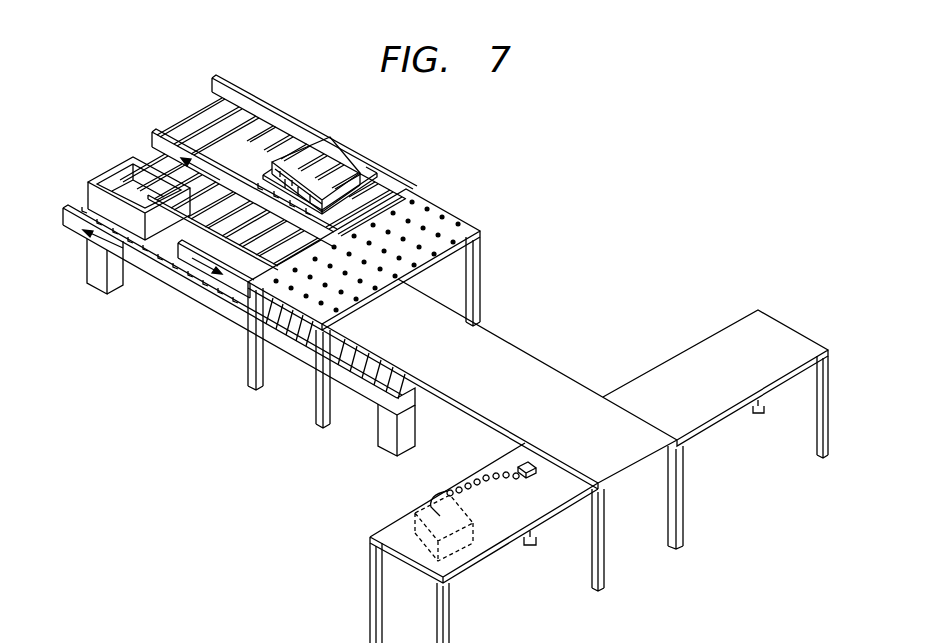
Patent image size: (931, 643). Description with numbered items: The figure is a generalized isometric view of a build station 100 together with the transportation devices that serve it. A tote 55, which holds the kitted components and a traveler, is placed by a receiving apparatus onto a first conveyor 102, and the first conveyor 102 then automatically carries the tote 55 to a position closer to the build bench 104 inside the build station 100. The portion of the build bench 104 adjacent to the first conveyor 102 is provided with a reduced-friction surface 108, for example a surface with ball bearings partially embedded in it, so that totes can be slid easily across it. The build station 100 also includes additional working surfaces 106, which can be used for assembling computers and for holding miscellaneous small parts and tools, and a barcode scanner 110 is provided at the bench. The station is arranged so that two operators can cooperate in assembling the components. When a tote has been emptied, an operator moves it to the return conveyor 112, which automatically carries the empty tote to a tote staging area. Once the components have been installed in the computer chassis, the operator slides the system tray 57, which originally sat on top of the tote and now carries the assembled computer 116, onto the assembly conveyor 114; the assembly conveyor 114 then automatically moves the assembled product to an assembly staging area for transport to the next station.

The build station 100 is at (552, 124).
The assembly conveyor 114 is at (182, 127).
The system tray 57 is at (367, 183).
The computer 116 is at (325, 148).
The first conveyor 102 is at (218, 275).
The reduced-friction surface 108 is at (445, 210).
The return conveyor 112 is at (155, 278).
The tote 55 is at (85, 196).
The build bench 104 is at (535, 358).
The working surfaces 106 is at (728, 420).
The barcode scanner 110 is at (523, 477).